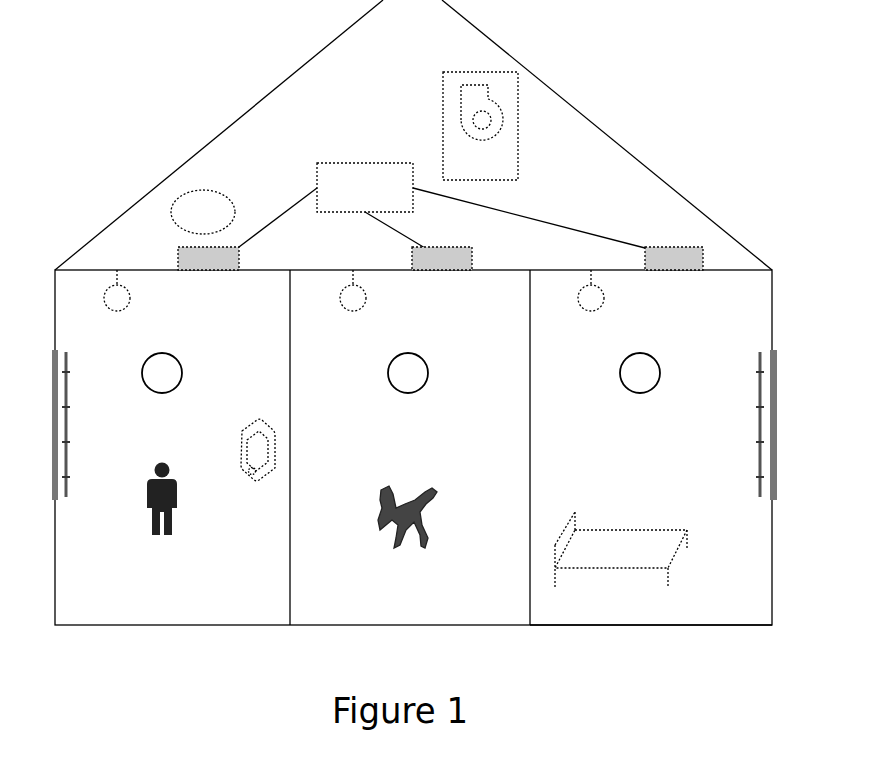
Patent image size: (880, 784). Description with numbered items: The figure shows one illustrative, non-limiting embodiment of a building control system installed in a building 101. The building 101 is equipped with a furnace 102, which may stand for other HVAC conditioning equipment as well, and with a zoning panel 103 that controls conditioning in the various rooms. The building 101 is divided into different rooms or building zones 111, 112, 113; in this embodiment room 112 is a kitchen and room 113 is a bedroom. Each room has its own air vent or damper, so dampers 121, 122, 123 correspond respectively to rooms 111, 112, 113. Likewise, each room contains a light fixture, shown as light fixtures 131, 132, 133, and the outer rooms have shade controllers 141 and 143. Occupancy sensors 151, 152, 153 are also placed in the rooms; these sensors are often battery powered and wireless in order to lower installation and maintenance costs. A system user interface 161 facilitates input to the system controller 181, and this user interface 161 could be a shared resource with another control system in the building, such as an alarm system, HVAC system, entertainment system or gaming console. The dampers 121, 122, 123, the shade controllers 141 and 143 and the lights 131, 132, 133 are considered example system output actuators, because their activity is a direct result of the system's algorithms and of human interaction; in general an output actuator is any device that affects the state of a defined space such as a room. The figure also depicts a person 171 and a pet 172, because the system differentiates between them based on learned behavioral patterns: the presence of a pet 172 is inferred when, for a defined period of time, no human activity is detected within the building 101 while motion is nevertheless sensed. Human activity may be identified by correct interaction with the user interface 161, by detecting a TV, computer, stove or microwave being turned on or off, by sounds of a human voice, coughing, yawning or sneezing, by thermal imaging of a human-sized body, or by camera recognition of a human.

The building 101 is at (413, 326).
The furnace 102 is at (480, 126).
The zoning panel 103 is at (442, 205).
The room 111 is at (272, 447).
The room 112 is at (513, 447).
The room 113 is at (651, 611).
The damper 121 is at (208, 258).
The damper 122 is at (442, 258).
The damper 123 is at (674, 258).
The light fixture 131 is at (116, 304).
The light fixture 132 is at (354, 304).
The light fixture 133 is at (592, 304).
The shade controller 141 is at (71, 436).
The shade controller 143 is at (756, 436).
The occupancy sensor 151 is at (162, 387).
The occupancy sensor 152 is at (408, 387).
The occupancy sensor 153 is at (640, 387).
The system user interface 161 is at (258, 461).
The person 171 is at (161, 512).
The pet 172 is at (407, 531).
The system controller 181 is at (203, 212).